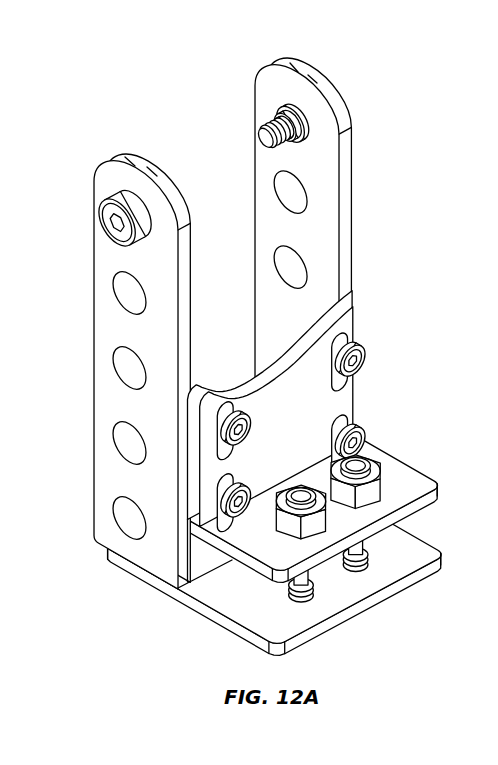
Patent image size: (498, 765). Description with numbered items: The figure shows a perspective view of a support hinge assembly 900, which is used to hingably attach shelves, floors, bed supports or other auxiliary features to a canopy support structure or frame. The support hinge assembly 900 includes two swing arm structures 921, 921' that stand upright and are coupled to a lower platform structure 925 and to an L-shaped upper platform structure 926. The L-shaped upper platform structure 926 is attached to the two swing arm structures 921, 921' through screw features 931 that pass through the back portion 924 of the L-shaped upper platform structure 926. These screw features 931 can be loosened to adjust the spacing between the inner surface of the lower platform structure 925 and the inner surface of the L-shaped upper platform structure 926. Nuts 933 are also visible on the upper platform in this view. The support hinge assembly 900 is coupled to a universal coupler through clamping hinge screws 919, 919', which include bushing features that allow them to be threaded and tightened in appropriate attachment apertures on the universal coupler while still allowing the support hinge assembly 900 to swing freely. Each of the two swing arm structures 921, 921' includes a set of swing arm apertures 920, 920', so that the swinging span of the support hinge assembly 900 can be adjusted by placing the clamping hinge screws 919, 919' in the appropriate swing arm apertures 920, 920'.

The support hinge assembly 900 is at (118, 57).
The clamping hinge screw 919 is at (98, 219).
The clamping hinge screw 919' is at (332, 117).
The swing arm aperture 920 is at (100, 327).
The swing arm aperture 920' is at (97, 403).
The swing arm structure 921 is at (117, 363).
The swing arm structure 921' is at (337, 271).
The back portion 924 is at (305, 442).
The lower platform structure 925 is at (412, 551).
The L-shaped upper platform structure 926 is at (413, 489).
The screw feature 931 is at (233, 412).
The nut 933 is at (376, 482).